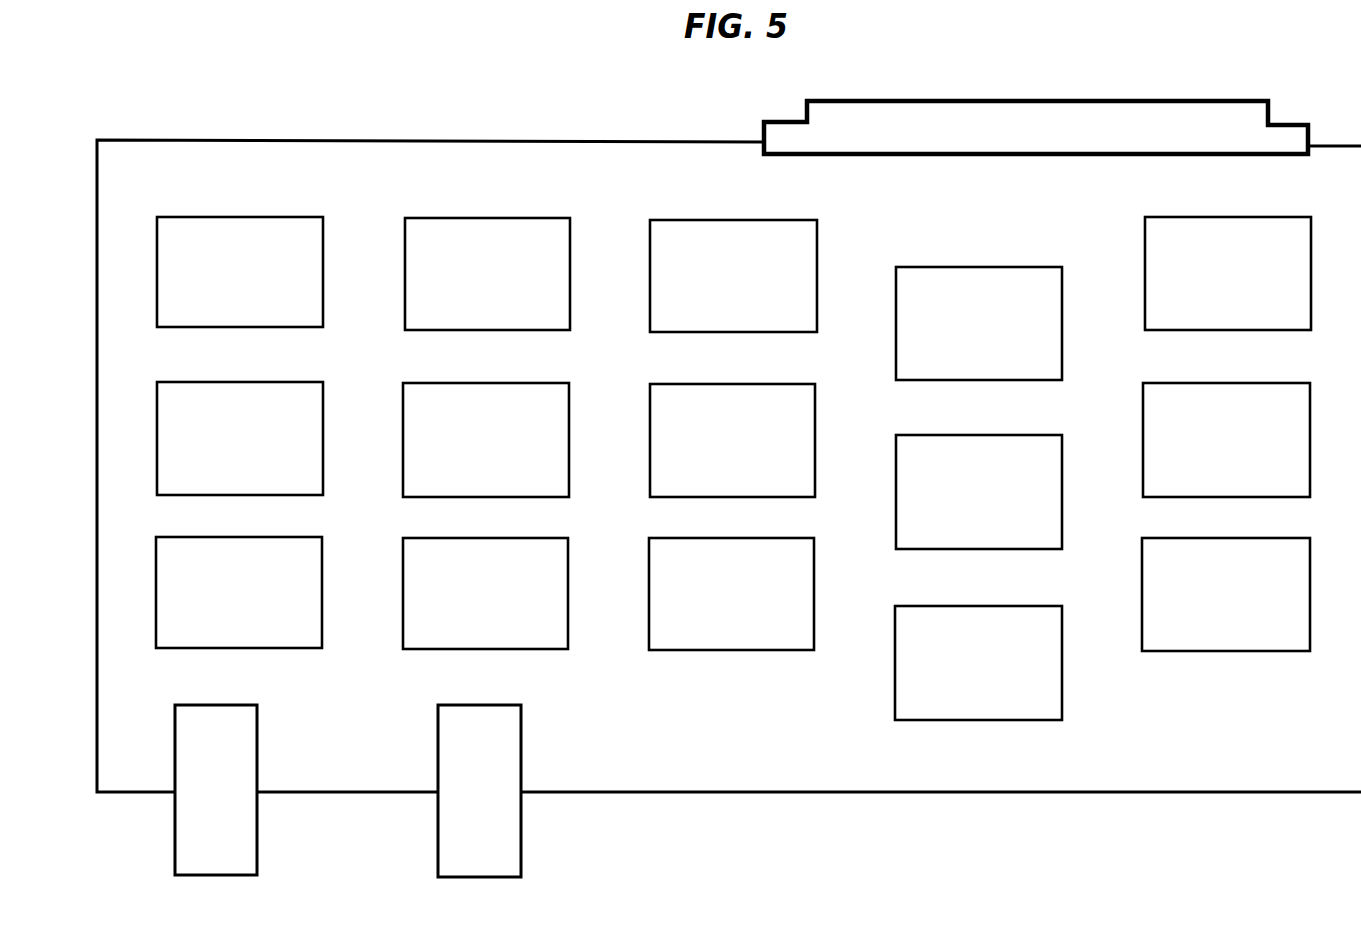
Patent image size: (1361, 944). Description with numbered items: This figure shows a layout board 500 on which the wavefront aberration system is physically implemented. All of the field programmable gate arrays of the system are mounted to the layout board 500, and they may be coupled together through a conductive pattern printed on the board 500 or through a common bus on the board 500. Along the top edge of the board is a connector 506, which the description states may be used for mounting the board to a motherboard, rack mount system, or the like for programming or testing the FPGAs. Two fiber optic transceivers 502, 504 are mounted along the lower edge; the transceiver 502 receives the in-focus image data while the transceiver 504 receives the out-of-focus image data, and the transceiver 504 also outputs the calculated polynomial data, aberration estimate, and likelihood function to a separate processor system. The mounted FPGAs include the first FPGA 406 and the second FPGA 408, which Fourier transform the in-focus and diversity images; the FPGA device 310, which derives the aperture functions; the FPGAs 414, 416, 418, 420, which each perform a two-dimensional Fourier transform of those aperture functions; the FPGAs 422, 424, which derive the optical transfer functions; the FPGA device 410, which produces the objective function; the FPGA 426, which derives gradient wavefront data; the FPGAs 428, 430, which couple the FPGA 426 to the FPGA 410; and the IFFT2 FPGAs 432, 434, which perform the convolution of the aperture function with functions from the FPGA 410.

The layout board 500 is at (420, 140).
The connector 506 is at (1077, 103).
The fiber optic transceiver 502 is at (258, 845).
The fiber optic transceiver 504 is at (521, 846).
The FPGA device 310 is at (462, 474).
The first FPGA 406 is at (215, 628).
The second FPGA block 408 is at (504, 629).
The FPGA device 410 is at (955, 352).
The FPGA 414 is at (216, 473).
The FPGA 416 is at (506, 309).
The FPGA 418 is at (708, 475).
The FPGA 420 is at (750, 629).
The FPGA 422 is at (216, 308).
The FPGA 424 is at (752, 311).
The FPGA 426 is at (955, 526).
The FPGA 428 is at (1204, 308).
The FPGA 430 is at (1202, 474).
The IFFT2 FPGA 432 is at (954, 697).
The IFFT2 FPGA 434 is at (1202, 629).